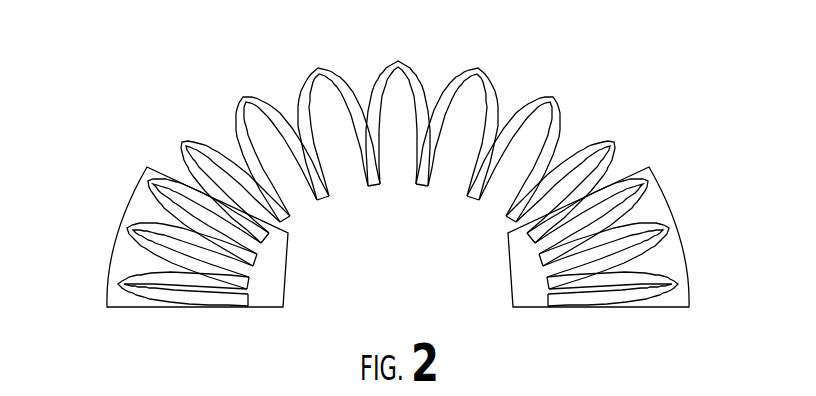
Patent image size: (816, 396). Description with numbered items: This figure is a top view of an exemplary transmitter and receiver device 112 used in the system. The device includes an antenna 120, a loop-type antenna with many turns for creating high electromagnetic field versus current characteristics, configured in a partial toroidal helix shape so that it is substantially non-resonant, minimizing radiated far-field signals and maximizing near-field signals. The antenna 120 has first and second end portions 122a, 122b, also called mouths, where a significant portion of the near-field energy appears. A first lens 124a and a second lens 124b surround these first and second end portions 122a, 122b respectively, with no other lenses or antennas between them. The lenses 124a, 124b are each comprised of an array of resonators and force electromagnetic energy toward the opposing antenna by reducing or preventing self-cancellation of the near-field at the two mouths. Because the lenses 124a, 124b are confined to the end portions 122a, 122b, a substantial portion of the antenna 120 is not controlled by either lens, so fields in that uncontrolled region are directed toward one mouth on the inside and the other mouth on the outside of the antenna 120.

The spring assembly 112 is at (397, 159).
The antenna 120 is at (412, 158).
The first end portion 122a is at (147, 176).
The second end portion 122b is at (649, 186).
The first lens 124a is at (113, 248).
The second lens 124b is at (674, 257).